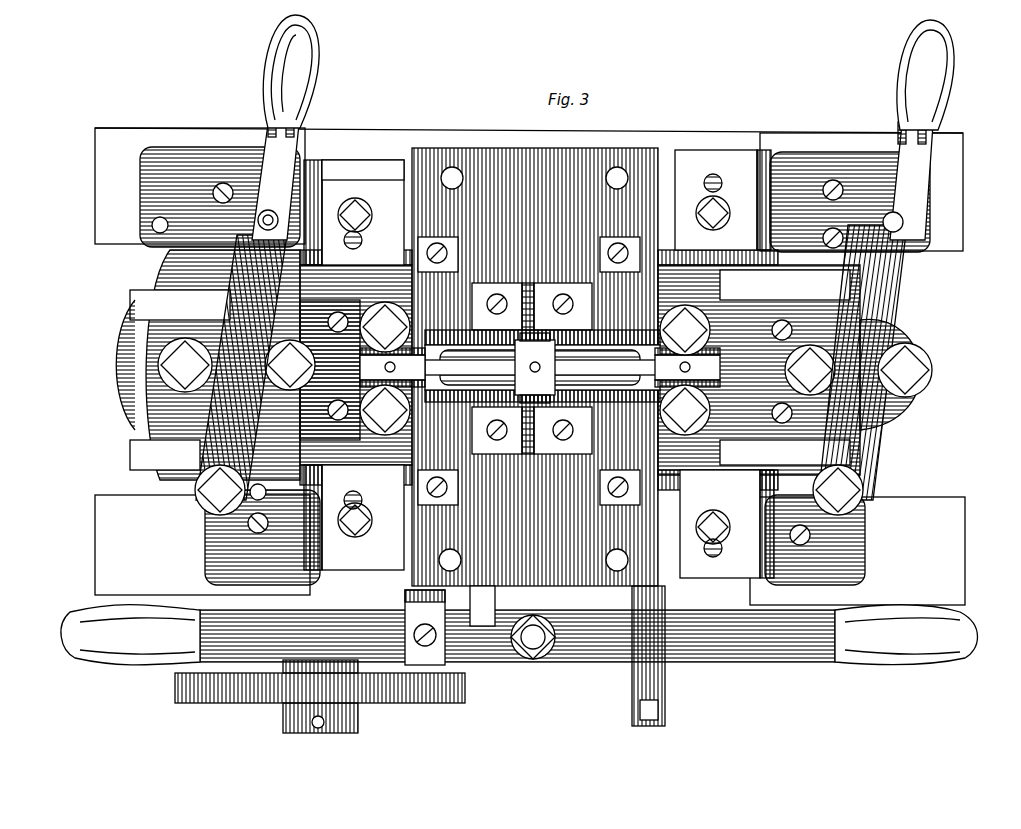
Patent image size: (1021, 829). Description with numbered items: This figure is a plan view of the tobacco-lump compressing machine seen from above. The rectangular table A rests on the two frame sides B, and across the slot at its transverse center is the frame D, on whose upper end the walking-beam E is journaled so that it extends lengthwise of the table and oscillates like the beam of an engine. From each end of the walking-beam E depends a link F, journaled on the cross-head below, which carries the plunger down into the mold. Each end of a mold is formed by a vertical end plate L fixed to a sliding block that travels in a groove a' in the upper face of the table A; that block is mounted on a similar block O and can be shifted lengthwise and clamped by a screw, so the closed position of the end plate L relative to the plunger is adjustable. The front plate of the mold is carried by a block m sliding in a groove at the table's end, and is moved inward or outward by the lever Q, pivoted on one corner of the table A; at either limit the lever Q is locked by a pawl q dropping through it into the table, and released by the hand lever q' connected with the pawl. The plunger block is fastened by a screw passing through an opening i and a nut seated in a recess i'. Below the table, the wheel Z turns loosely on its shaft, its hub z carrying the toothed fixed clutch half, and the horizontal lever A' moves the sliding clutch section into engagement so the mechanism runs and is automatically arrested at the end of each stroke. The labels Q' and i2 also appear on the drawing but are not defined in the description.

The table A is at (538, 437).
The lever A' is at (519, 644).
The frame side B is at (425, 627).
The frame D is at (532, 368).
The walking-beam E is at (608, 395).
The link F is at (712, 365).
The end plate L is at (539, 364).
The block O is at (363, 168).
The lever Q is at (307, 71).
The right handle lever Q' is at (896, 267).
The pawl q is at (222, 375).
The lever q' is at (294, 164).
The opening i is at (530, 368).
The recess i' is at (543, 365).
The bolt hole i2 is at (551, 362).
The block m is at (550, 368).
The wheel Z is at (385, 697).
The hub z is at (258, 660).
The groove a' is at (455, 580).